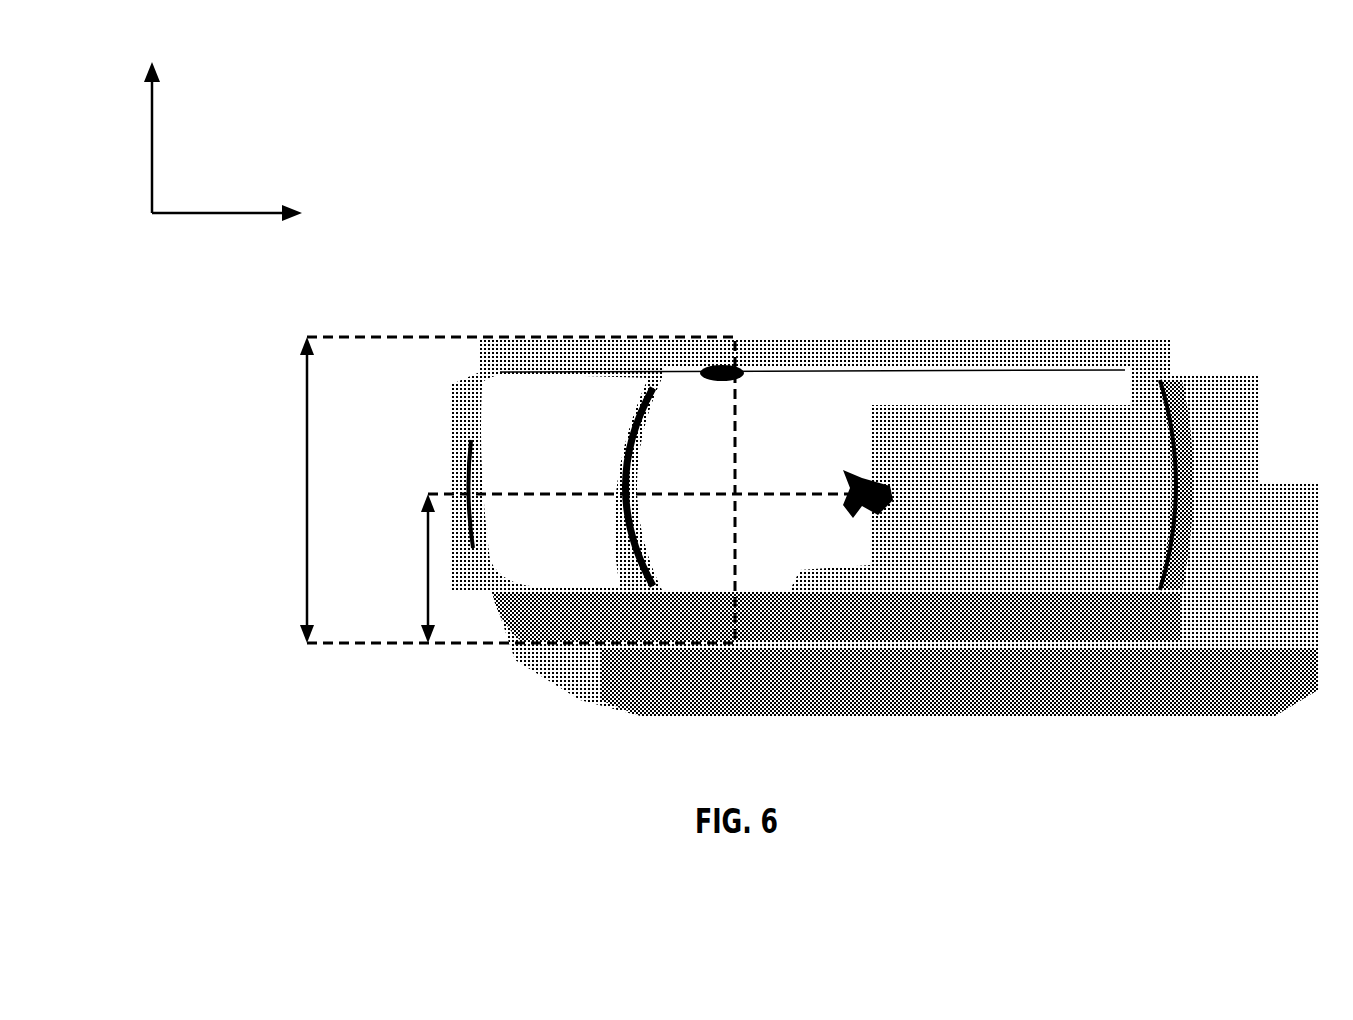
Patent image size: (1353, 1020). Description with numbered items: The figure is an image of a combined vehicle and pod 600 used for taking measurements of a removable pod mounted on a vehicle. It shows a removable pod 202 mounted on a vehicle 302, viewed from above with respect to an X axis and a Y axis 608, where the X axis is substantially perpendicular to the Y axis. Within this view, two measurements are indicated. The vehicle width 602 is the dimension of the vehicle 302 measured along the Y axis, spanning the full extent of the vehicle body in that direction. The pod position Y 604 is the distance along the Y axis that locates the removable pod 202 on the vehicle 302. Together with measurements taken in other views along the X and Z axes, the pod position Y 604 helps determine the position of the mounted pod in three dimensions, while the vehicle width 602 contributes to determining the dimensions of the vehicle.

The combined vehicle and pod 600 is at (885, 385).
The removable pod 202 is at (860, 483).
The vehicle 302 is at (997, 478).
The vehicle width 602 is at (307, 492).
The pod position Y 604 is at (427, 570).
The X axis and Y axis 608 is at (152, 137).